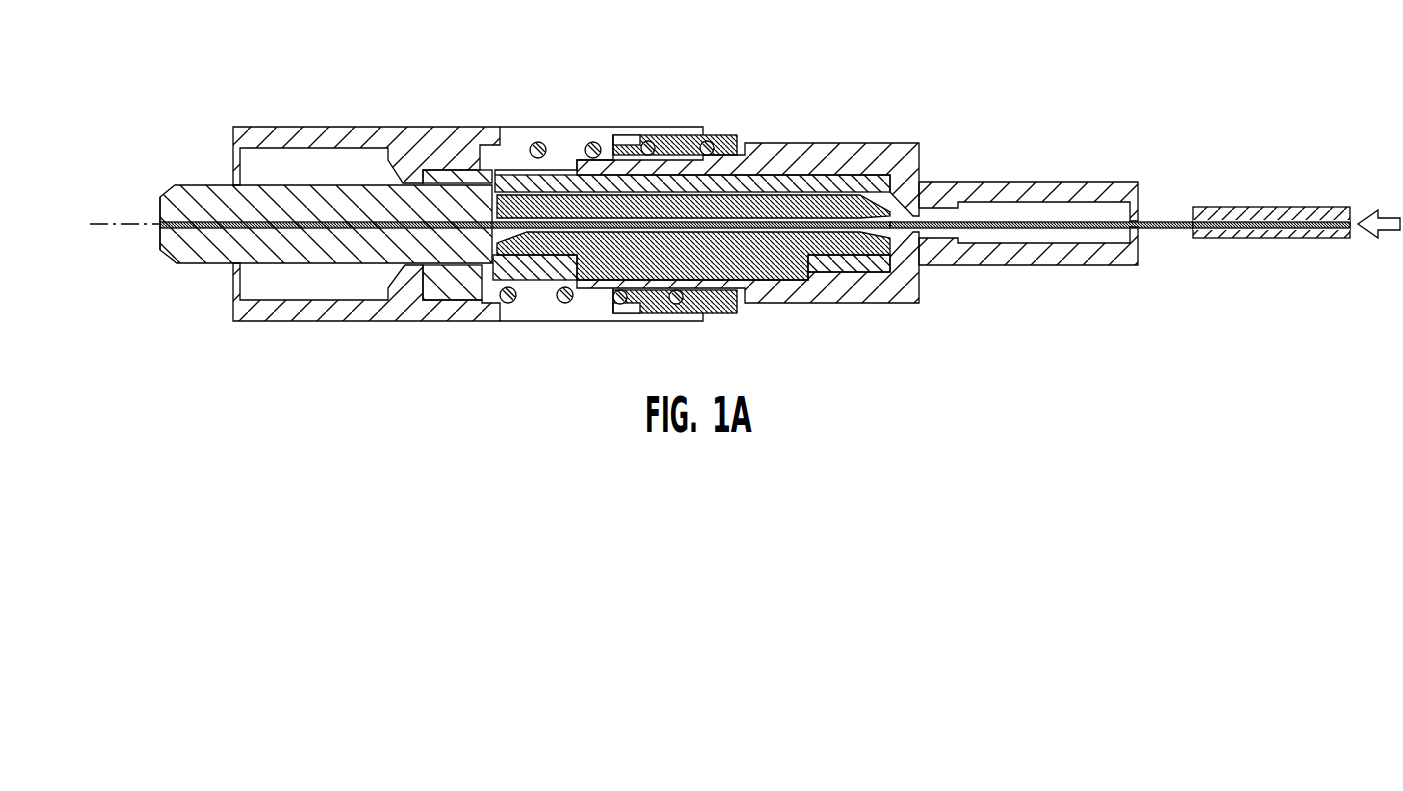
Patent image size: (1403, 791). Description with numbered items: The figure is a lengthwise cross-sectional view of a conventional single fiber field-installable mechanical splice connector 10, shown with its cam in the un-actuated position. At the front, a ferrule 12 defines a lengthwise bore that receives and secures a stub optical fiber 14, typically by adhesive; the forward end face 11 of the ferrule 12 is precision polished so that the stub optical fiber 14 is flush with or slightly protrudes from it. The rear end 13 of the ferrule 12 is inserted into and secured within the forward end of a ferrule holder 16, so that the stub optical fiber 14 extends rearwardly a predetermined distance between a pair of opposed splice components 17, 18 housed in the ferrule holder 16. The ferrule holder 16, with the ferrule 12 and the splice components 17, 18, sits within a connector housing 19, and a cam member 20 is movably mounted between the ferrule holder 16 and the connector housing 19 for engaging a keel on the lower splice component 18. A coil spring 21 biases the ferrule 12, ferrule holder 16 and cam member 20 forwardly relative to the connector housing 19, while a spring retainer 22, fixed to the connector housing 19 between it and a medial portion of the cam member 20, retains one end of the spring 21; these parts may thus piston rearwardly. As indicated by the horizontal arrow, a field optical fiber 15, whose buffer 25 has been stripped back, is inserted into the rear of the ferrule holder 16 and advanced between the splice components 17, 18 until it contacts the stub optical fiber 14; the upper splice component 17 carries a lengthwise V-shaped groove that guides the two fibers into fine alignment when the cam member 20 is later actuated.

The mechanical splice connector 10 is at (641, 194).
The end face 11 is at (158, 242).
The ferrule 12 is at (188, 185).
The rear end of the ferrule 13 is at (480, 183).
The stub optical fiber 14 is at (208, 229).
The field optical fiber 15 is at (1067, 233).
The ferrule holder 16 is at (1010, 182).
The upper splice component 17 is at (797, 207).
The lower splice component 18 is at (777, 280).
The connector housing 19 is at (345, 321).
The cam member 20 is at (891, 143).
The coil spring 21 is at (540, 152).
The spring retainer 22 is at (723, 134).
The buffer 25 is at (1278, 207).